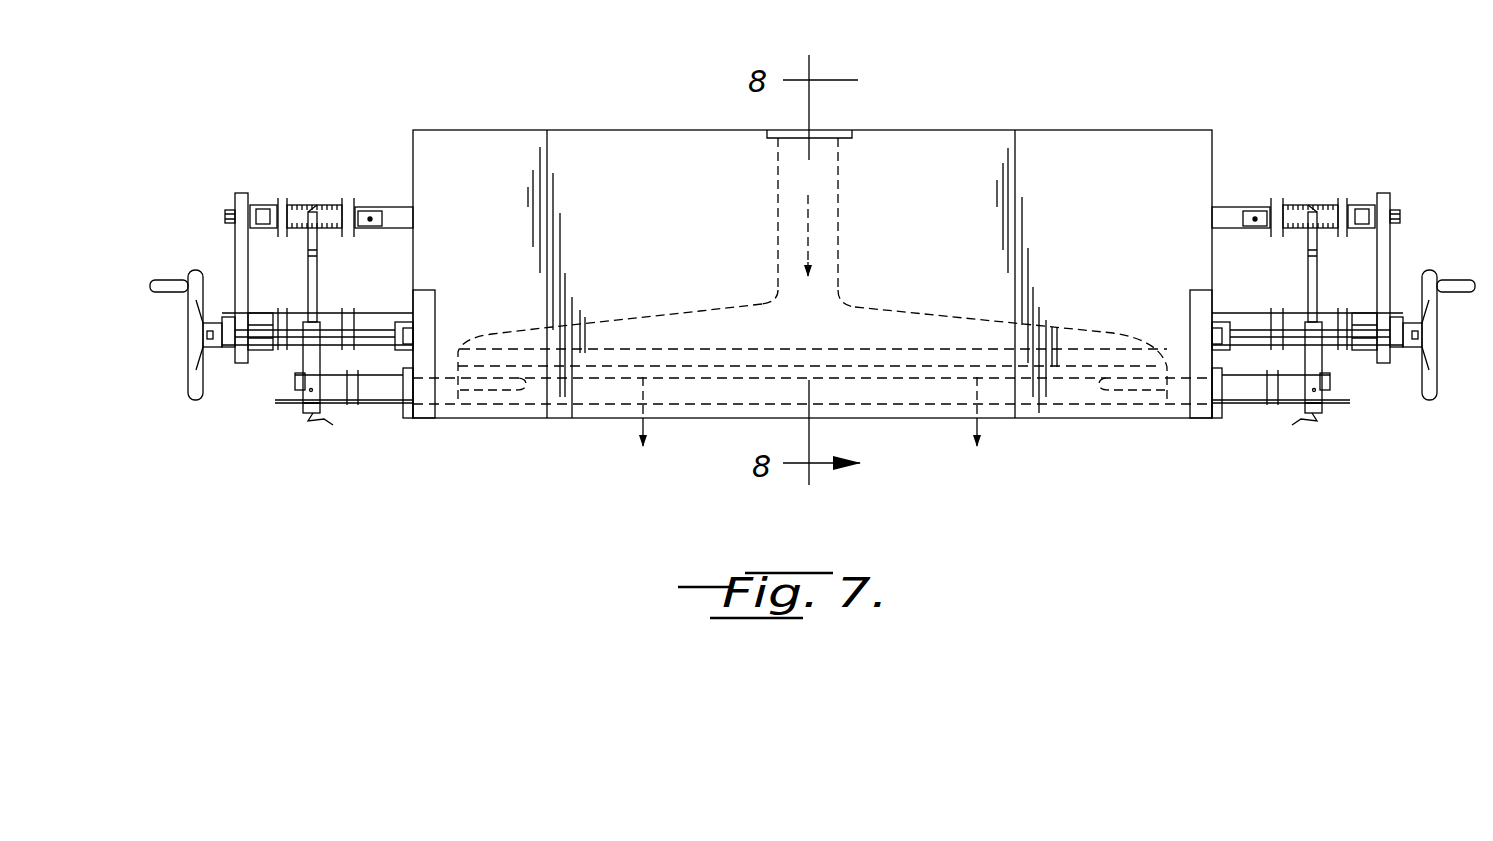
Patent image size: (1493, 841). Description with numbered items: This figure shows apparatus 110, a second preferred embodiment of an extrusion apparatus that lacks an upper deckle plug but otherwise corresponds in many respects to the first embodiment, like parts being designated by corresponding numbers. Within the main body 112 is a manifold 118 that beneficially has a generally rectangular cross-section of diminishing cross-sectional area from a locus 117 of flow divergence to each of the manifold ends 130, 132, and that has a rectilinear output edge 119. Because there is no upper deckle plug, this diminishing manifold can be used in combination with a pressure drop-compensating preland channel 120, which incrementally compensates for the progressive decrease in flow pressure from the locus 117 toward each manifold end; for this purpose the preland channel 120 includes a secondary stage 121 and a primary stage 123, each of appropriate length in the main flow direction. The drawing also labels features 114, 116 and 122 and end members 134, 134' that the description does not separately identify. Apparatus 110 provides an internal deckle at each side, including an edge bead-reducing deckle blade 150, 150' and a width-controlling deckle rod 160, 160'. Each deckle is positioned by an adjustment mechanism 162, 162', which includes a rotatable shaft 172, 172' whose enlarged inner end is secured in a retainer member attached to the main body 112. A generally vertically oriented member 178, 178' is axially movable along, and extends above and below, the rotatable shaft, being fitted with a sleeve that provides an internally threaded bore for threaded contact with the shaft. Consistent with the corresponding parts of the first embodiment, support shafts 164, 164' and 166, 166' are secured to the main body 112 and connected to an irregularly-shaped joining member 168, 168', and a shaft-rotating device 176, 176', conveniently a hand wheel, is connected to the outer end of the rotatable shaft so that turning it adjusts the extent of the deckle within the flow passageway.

The extrusion apparatus 110 is at (378, 90).
The main body 112 is at (666, 128).
The inlet passage 114 is at (845, 203).
The inlet passage wall 116 is at (839, 247).
The locus of flow divergence 117 is at (808, 306).
The manifold 118 is at (705, 306).
The rectilinear output edge 119 is at (772, 327).
The preland channel 120 is at (664, 365).
The secondary stage 121 is at (543, 383).
The outlet slot 122 is at (683, 413).
The primary stage 123 is at (600, 393).
The manifold end 130 is at (1127, 340).
The manifold end 132 is at (492, 337).
The end plate 134 is at (1172, 333).
The end plate 134' is at (455, 334).
The deckle blade 150 is at (1281, 416).
The deckle blade 150' is at (360, 419).
The deckle rod 160 is at (1316, 438).
The deckle rod 160' is at (303, 437).
The adjustment mechanism 162 is at (1426, 227).
The adjustment mechanism 162' is at (186, 211).
The support shaft 164 is at (1293, 194).
The support shaft 164' is at (331, 194).
The support shaft 166 is at (1307, 314).
The support shaft 166' is at (317, 314).
The joining member 168 is at (1419, 278).
The joining member 168' is at (200, 278).
The rotatable shaft 172 is at (1377, 360).
The rotatable shaft 172' is at (247, 358).
The shaft-rotating device 176 is at (1439, 367).
The shaft-rotating device 176' is at (182, 362).
The vertically oriented member 178 is at (1277, 304).
The vertically oriented member 178' is at (347, 304).